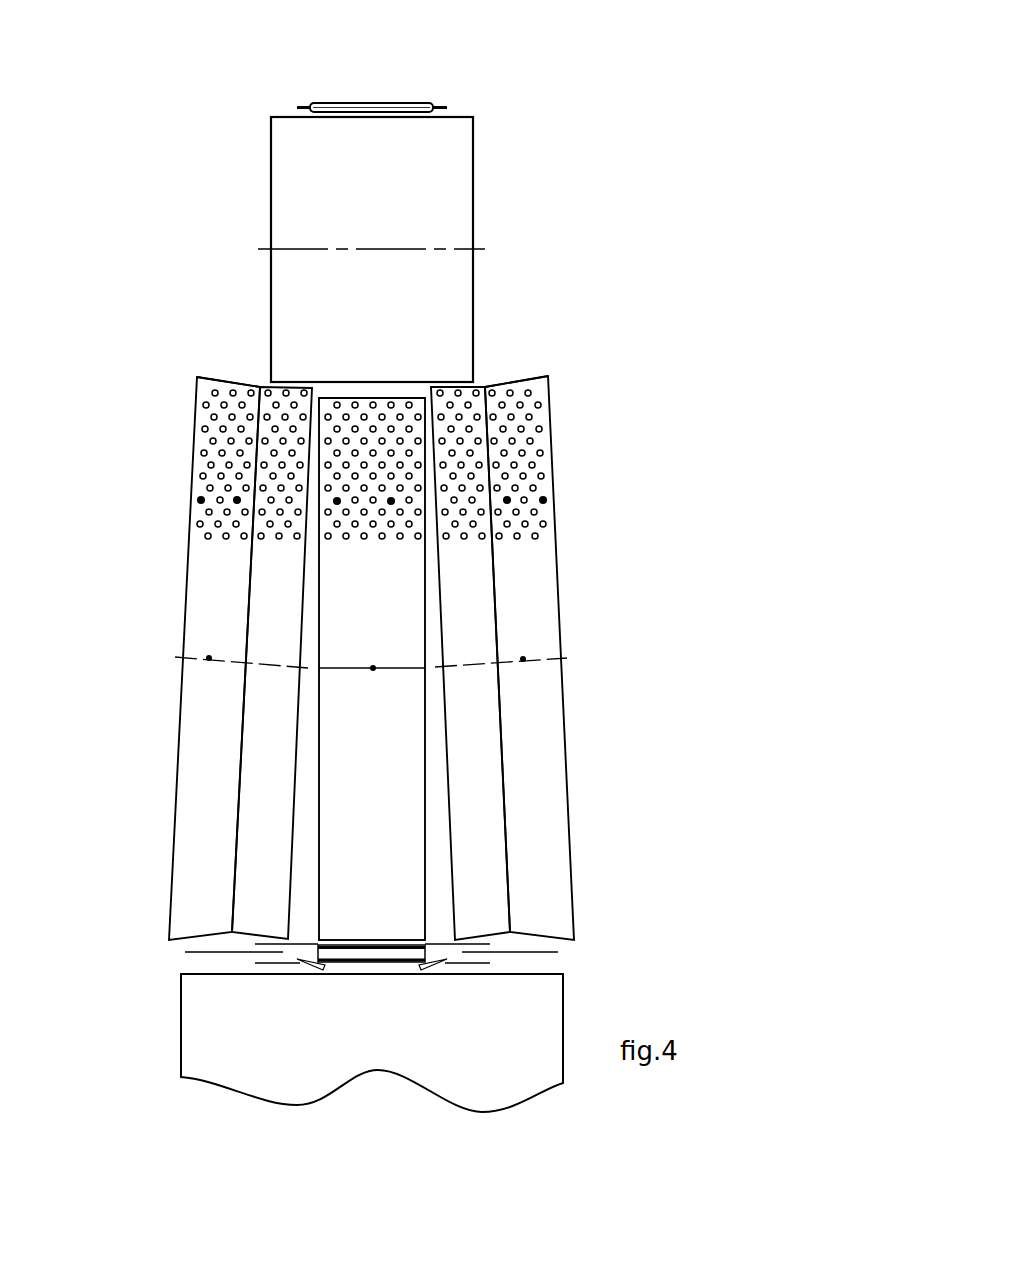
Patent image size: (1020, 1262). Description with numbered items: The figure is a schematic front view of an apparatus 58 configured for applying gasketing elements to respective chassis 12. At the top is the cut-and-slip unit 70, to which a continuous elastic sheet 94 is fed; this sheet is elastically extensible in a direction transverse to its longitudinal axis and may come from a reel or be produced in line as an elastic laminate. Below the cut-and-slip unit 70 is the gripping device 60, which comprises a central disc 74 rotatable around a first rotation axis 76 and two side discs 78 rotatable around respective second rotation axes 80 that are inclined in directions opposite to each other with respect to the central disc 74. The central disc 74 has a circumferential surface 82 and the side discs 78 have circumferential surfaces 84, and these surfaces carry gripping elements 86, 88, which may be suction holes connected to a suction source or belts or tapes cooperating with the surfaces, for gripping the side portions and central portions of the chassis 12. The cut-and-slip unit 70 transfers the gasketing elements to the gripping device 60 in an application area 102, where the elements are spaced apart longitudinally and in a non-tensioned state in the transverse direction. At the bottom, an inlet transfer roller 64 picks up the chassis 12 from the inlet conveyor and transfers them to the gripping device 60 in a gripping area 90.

The chassis 12 is at (355, 962).
The apparatus 58 is at (379, 219).
The gripping device 60 is at (373, 689).
The inlet transfer roller 64 is at (148, 1032).
The cut-and-slip unit 70 is at (562, 114).
The central disc 74 is at (410, 378).
The first rotation axis 76 is at (373, 668).
The side discs 78 is at (227, 367).
The second rotation axes 80 is at (209, 658).
The circumferential surface of central disc 82 is at (388, 985).
The circumferential surfaces of side discs 84 is at (376, 629).
The gripping elements of central disc 86 is at (391, 501).
The gripping elements of side discs 88 is at (237, 500).
The gripping area 90 is at (588, 957).
The continuous elastic sheet 94 is at (410, 105).
The application area 102 is at (553, 367).